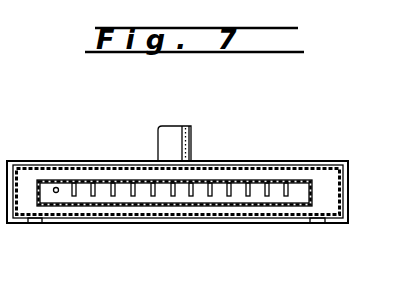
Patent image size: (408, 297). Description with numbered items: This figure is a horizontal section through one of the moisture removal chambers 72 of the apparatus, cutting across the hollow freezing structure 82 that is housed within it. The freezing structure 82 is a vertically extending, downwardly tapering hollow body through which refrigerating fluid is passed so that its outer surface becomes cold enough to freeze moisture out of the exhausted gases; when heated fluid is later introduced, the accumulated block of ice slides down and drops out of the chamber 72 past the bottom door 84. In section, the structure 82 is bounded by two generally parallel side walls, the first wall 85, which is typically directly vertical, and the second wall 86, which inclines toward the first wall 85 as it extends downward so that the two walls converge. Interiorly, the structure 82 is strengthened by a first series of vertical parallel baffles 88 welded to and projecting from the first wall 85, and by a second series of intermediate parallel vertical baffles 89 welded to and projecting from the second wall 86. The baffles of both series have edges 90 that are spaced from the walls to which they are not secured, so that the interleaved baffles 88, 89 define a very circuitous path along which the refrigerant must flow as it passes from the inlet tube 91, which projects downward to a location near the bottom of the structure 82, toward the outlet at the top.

The moisture removal chamber 72 is at (106, 213).
The hollow freezing structure 82 is at (273, 143).
The bottom door 84 is at (200, 225).
The first wall 85 is at (283, 213).
The second wall 86 is at (290, 181).
The first series of vertical parallel baffles 88 is at (90, 188).
The second series of intermediate parallel vertical baffles 89 is at (76, 182).
The edges 90 is at (186, 229).
The inlet tube 91 is at (56, 187).